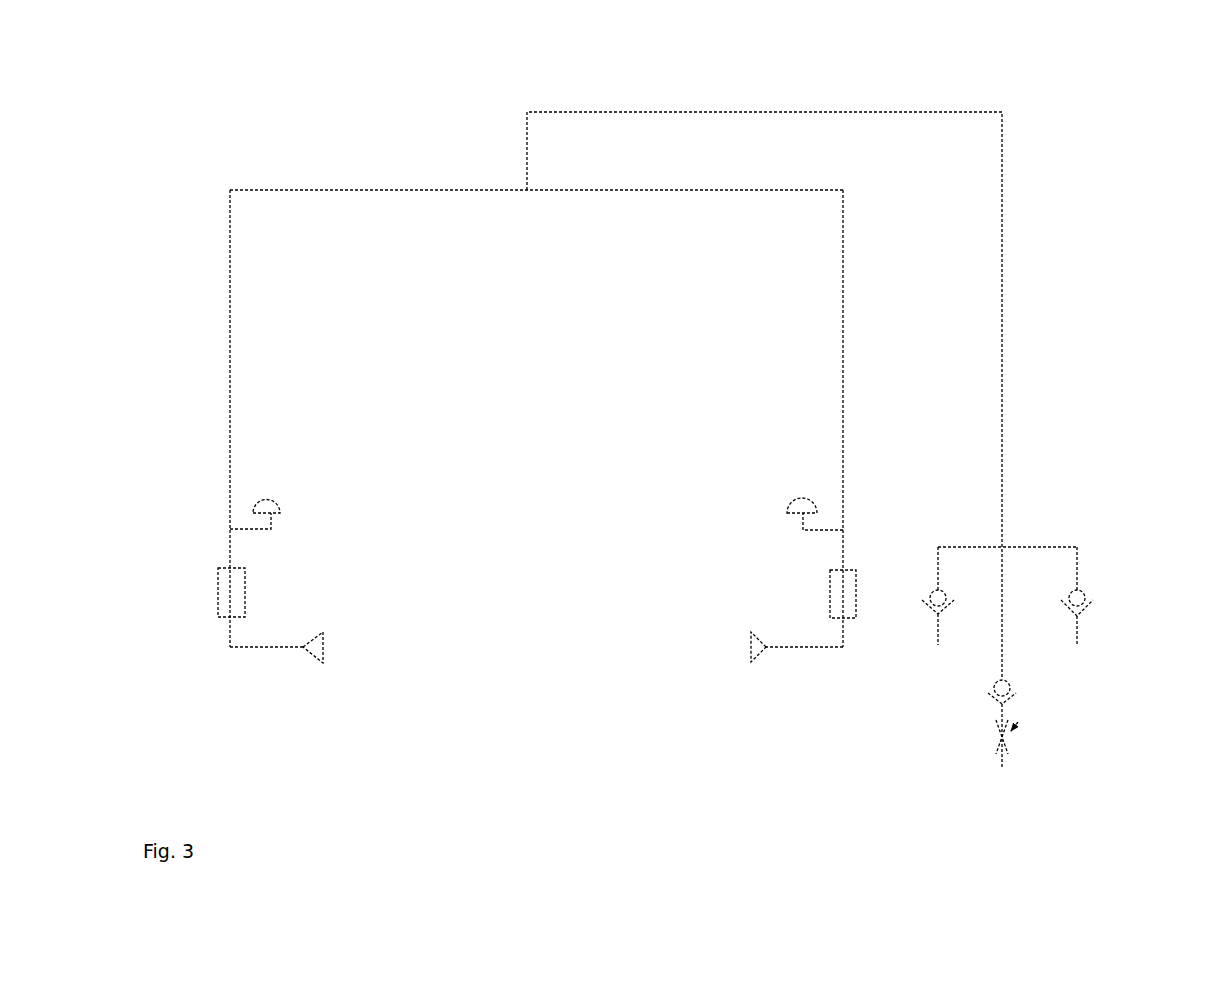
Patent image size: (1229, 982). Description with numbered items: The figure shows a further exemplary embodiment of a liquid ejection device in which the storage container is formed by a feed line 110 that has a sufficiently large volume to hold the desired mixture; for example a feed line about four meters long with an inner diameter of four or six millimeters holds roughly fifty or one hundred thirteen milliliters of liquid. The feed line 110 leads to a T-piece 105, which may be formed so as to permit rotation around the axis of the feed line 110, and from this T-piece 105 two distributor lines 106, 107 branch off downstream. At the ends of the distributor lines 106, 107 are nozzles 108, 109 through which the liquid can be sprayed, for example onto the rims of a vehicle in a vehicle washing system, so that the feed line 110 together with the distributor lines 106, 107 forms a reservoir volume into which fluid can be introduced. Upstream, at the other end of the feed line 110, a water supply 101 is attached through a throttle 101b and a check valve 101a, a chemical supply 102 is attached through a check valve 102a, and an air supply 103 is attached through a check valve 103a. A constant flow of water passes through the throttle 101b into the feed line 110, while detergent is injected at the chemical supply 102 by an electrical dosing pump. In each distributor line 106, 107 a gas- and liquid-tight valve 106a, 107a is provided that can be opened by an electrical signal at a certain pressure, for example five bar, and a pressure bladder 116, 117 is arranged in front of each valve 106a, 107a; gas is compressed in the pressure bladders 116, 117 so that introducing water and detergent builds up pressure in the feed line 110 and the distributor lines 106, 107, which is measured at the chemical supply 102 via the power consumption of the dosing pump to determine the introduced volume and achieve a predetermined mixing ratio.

The water supply 101 is at (1001, 770).
The check valve 101a is at (985, 686).
The throttle 101b is at (997, 738).
The chemical supply 102 is at (1083, 655).
The check valve 102a is at (1096, 594).
The air supply 103 is at (937, 650).
The check valve 103a is at (925, 598).
The T-piece 105 is at (527, 196).
The distributor line 106 is at (216, 315).
The valve 106a is at (212, 598).
The distributor line 107 is at (830, 306).
The valve 107a is at (822, 584).
The nozzle 108 is at (315, 672).
The nozzle 109 is at (740, 668).
The feed line 110 is at (815, 105).
The pressure bladder 116 is at (280, 508).
The pressure bladder 117 is at (790, 511).